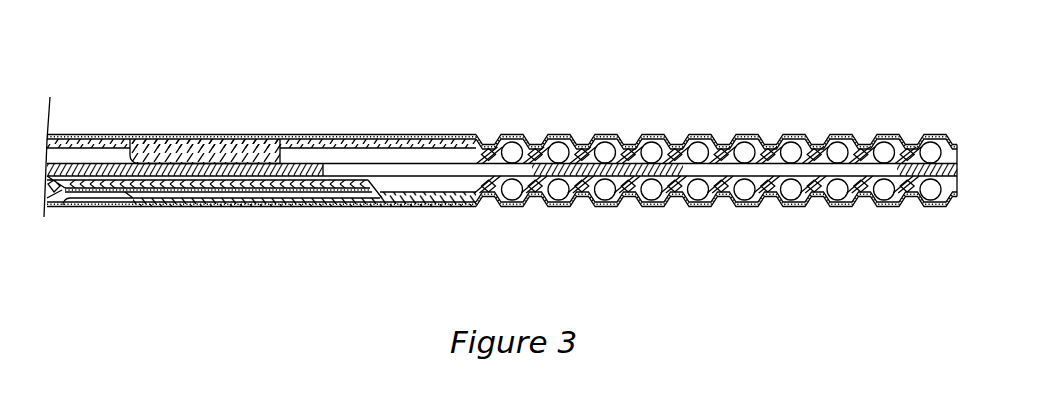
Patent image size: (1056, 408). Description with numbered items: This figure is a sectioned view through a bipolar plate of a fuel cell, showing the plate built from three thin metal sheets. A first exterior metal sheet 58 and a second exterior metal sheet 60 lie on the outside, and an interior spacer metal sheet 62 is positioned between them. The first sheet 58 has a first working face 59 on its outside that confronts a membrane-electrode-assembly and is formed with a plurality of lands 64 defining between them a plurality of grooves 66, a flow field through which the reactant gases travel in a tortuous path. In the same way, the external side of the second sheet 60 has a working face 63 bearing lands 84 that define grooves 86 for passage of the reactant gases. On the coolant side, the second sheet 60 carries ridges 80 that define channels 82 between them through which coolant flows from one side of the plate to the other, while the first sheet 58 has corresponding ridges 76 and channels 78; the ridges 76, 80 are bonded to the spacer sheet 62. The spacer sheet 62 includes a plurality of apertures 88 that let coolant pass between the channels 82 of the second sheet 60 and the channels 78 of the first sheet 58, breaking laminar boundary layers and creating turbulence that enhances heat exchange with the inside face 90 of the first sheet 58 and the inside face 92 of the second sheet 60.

The first exterior metal sheet 58 is at (90, 124).
The first working face 59 is at (446, 132).
The second exterior metal sheet 60 is at (202, 215).
The interior spacer metal sheet 62 is at (968, 173).
The working face 63 is at (402, 215).
The lands 64 is at (518, 158).
The grooves 66 is at (541, 132).
The ridges 76 is at (486, 162).
The channels 78 is at (609, 157).
The ridges 80 is at (498, 180).
The channels 82 is at (544, 190).
The lands 84 is at (602, 206).
The grooves 86 is at (673, 208).
The apertures 88 is at (741, 170).
The inside face 90 is at (349, 158).
The inside face 92 is at (391, 176).